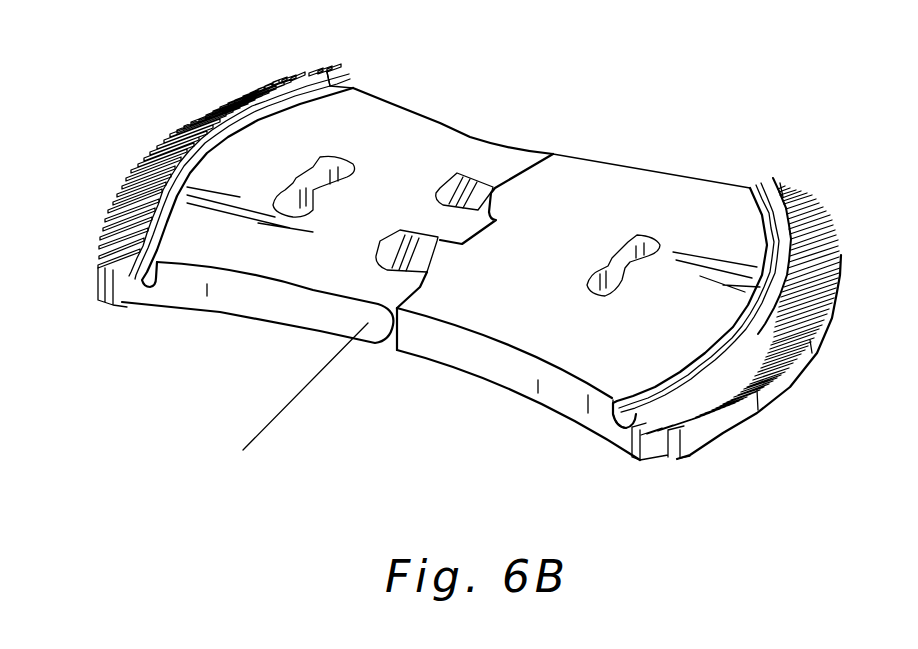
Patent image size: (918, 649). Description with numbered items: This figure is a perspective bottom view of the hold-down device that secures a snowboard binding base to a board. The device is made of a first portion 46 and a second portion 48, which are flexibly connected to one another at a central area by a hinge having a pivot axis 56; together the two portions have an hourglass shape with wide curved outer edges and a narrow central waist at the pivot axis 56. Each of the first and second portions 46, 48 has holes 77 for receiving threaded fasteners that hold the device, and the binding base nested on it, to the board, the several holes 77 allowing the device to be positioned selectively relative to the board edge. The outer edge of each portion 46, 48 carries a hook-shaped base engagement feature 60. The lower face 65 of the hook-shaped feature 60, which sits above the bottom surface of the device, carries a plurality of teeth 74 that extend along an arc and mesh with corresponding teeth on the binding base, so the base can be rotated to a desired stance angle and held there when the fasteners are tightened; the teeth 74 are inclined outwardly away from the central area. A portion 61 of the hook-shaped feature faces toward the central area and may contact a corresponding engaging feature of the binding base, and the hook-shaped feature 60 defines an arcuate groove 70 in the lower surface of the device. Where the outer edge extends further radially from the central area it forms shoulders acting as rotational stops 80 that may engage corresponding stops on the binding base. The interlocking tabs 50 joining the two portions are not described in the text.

The first portion 46 is at (513, 321).
The second portion 48 is at (307, 268).
The interlocking tabs 50 is at (487, 183).
The pivot axis 56 is at (541, 155).
The hook-shaped base engagement feature 60 is at (155, 303).
The portion of the hook-shaped feature 61 is at (454, 243).
The lower face 65 is at (817, 327).
The arcuate groove 70 is at (333, 88).
The teeth 74 is at (168, 142).
The holes 77 is at (337, 160).
The rotational stops 80 is at (282, 80).